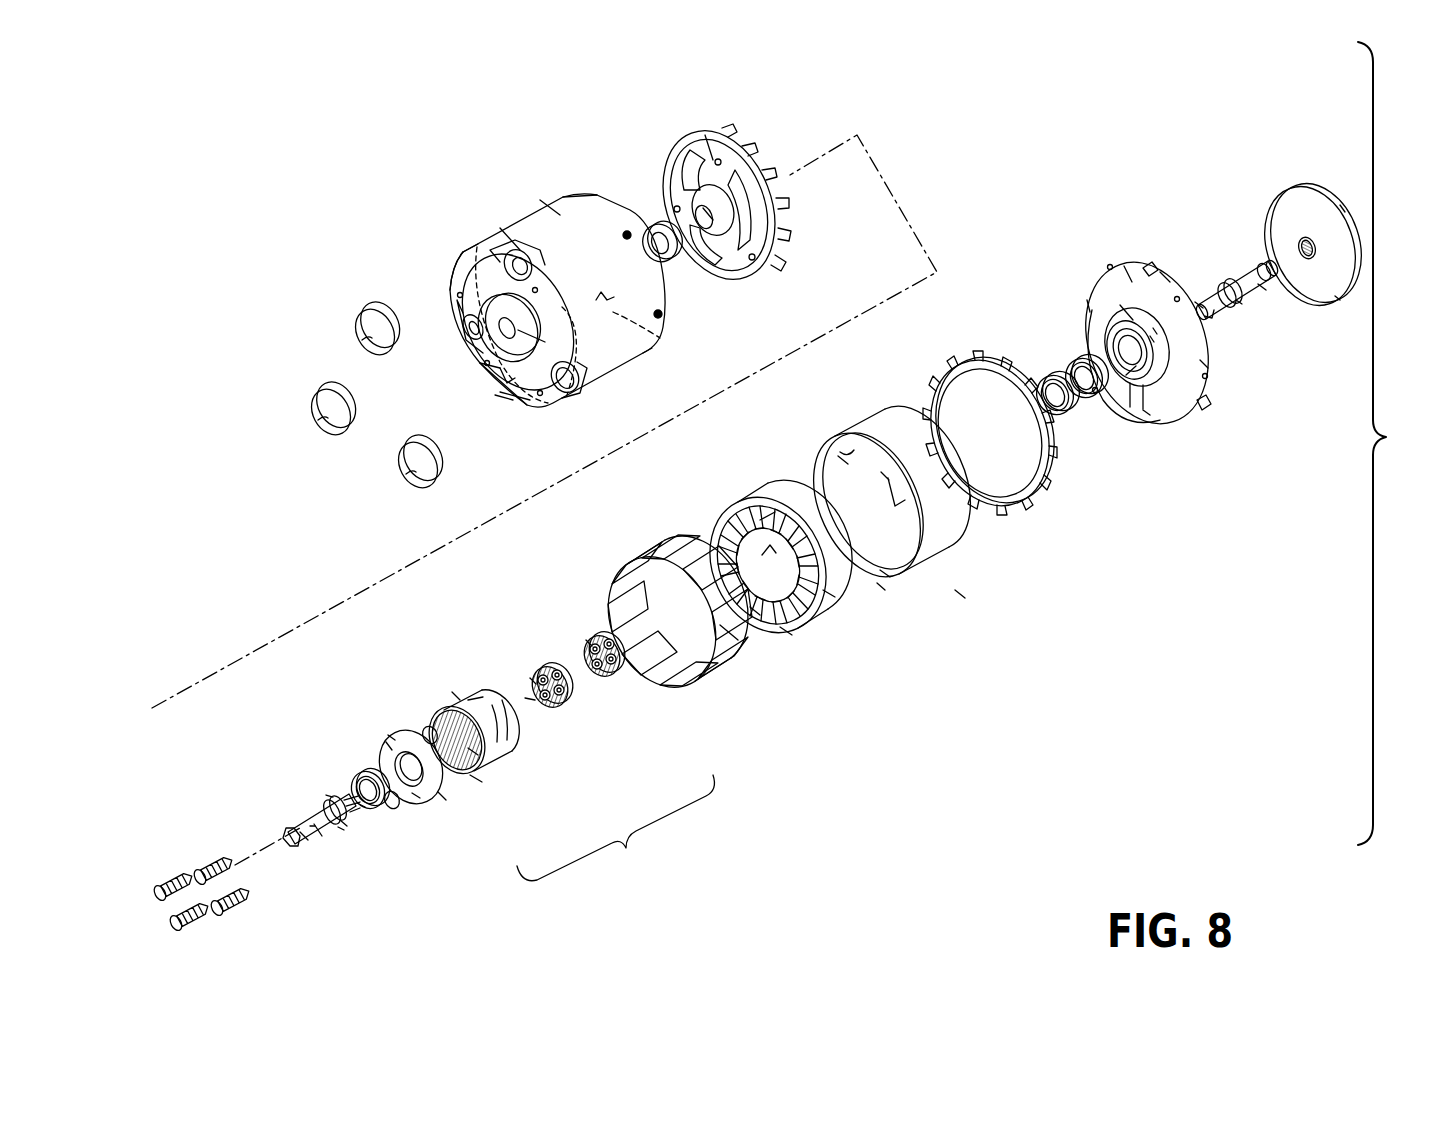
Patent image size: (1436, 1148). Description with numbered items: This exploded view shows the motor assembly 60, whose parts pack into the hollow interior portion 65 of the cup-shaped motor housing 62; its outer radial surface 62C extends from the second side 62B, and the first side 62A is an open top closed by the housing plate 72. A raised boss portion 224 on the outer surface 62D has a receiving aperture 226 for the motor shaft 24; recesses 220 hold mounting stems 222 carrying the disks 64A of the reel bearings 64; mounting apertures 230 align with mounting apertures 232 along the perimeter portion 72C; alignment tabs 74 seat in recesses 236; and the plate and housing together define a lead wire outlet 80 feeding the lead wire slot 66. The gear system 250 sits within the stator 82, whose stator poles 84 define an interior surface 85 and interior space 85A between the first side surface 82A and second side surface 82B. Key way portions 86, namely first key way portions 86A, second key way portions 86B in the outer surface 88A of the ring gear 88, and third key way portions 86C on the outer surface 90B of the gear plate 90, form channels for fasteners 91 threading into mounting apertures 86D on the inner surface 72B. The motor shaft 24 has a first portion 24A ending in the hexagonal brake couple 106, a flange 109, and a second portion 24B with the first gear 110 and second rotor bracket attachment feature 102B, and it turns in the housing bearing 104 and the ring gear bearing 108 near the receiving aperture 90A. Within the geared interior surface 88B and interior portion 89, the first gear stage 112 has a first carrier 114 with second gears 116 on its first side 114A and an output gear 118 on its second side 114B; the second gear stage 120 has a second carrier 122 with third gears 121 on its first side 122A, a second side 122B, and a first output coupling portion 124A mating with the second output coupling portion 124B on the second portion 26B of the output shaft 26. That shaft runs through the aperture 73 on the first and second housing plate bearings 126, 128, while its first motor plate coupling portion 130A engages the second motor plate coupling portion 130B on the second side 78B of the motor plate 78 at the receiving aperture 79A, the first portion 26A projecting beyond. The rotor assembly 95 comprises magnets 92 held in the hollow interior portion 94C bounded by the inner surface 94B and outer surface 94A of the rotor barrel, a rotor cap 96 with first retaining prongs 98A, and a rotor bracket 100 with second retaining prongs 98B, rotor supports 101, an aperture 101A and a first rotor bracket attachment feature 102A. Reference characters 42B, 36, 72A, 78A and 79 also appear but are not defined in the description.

The motor assembly 60 is at (1388, 437).
The motor housing 62 is at (475, 155).
The first side of the motor housing 62A is at (563, 196).
The second side of the motor housing 62B is at (463, 270).
The outer radial surface 62C is at (523, 210).
The outer surface of the second side 62D is at (500, 368).
The mounting surface 42B is at (483, 258).
The reel bearings 64 is at (348, 315).
The disks 64A is at (356, 318).
The hollow interior portion 65 is at (660, 338).
The lead wire slot 66 is at (513, 392).
The recesses 220 is at (495, 258).
The mounting stems 222 is at (518, 250).
The raised boss portion 224 is at (523, 337).
The receiving aperture 226 is at (522, 412).
The mounting apertures 230 is at (560, 188).
The recesses 236 is at (560, 193).
The housing bearing 104 is at (647, 230).
The rotor bracket 100 is at (685, 137).
The rotor supports 101 is at (675, 207).
The aperture 101A is at (725, 213).
The first rotor bracket attachment feature 102A is at (713, 192).
The second set of retaining prongs 98B is at (792, 235).
The key way portions 86 is at (780, 551).
The first key way portions 86A is at (708, 545).
The second key way portions 86B is at (483, 697).
The third key way portions 86C is at (476, 780).
The mounting apertures 86D is at (1133, 320).
The magnets 92 is at (727, 630).
The stator poles 84 is at (752, 502).
The interior surface 85 is at (758, 520).
The interior space 85A is at (750, 607).
The stator 82 is at (823, 590).
The first side surface 82A is at (780, 627).
The second side surface 82B is at (877, 583).
The outer surface 94A is at (933, 547).
The inner surface 94B is at (842, 460).
The hollow interior portion 94C is at (880, 570).
The rotor assembly 95 is at (970, 622).
The rotor cap 96 is at (1001, 464).
The first set of retaining prongs 98A is at (1005, 510).
The first housing plate bearing 126 is at (1043, 377).
The second housing plate bearing 128 is at (1070, 360).
The housing plate 72 is at (1100, 343).
The end cap rim 72A is at (1170, 282).
The inner surface 72B is at (1132, 282).
The perimeter portion 72C is at (1087, 310).
The aperture 73 is at (1134, 368).
The lead wire outlet 80 is at (1143, 410).
The alignment tabs 74 is at (1147, 265).
The mounting apertures 232 is at (1110, 267).
The second output coupling portion 124B is at (1205, 372).
The first motor plate coupling portion 130A is at (1195, 302).
The second motor plate coupling portion 130B is at (1240, 303).
The output shaft 26 is at (1264, 289).
The first portion of the output shaft 26A is at (1256, 262).
The second portion of the output shaft 26B is at (1200, 318).
The shaft axis 36 is at (1265, 305).
The motor plate 78 is at (1301, 239).
The disc outer edge 78A is at (1343, 208).
The second side of the motor plate 78B is at (1340, 298).
The disc hub 79 is at (1288, 216).
The receiving aperture 79A is at (1308, 242).
The motor shaft 24 is at (311, 815).
The first portion of the motor shaft 24A is at (303, 812).
The second portion of the motor shaft 24B is at (346, 826).
The radially extending flange 109 is at (333, 797).
The brake couple 106 is at (315, 826).
The second rotor bracket attachment feature 102B is at (340, 827).
The ring gear bearing 108 is at (365, 773).
The first gear 110 is at (357, 803).
The gear plate 90 is at (389, 744).
The receiving aperture 90A is at (412, 793).
The outer surface 90B is at (388, 735).
The ring gear 88 is at (474, 729).
The outer surface 88A is at (440, 688).
The geared interior surface 88B is at (476, 754).
The interior portion 89 is at (531, 698).
The first carrier 114 is at (530, 701).
The first side of the first carrier 114A is at (545, 668).
The second side of the first carrier 114B is at (563, 697).
The first gear stage 112 is at (530, 717).
The second gear 116 is at (532, 678).
The output gear 118 is at (545, 665).
The second carrier 122 is at (621, 658).
The first side of the second carrier 122A is at (610, 683).
The second side of the second carrier 122B is at (603, 623).
The second gear stage 120 is at (588, 620).
The third gear 121 is at (585, 652).
The first output coupling portion 124A is at (600, 682).
The fasteners 91 is at (238, 904).
The gear system 250 is at (615, 828).